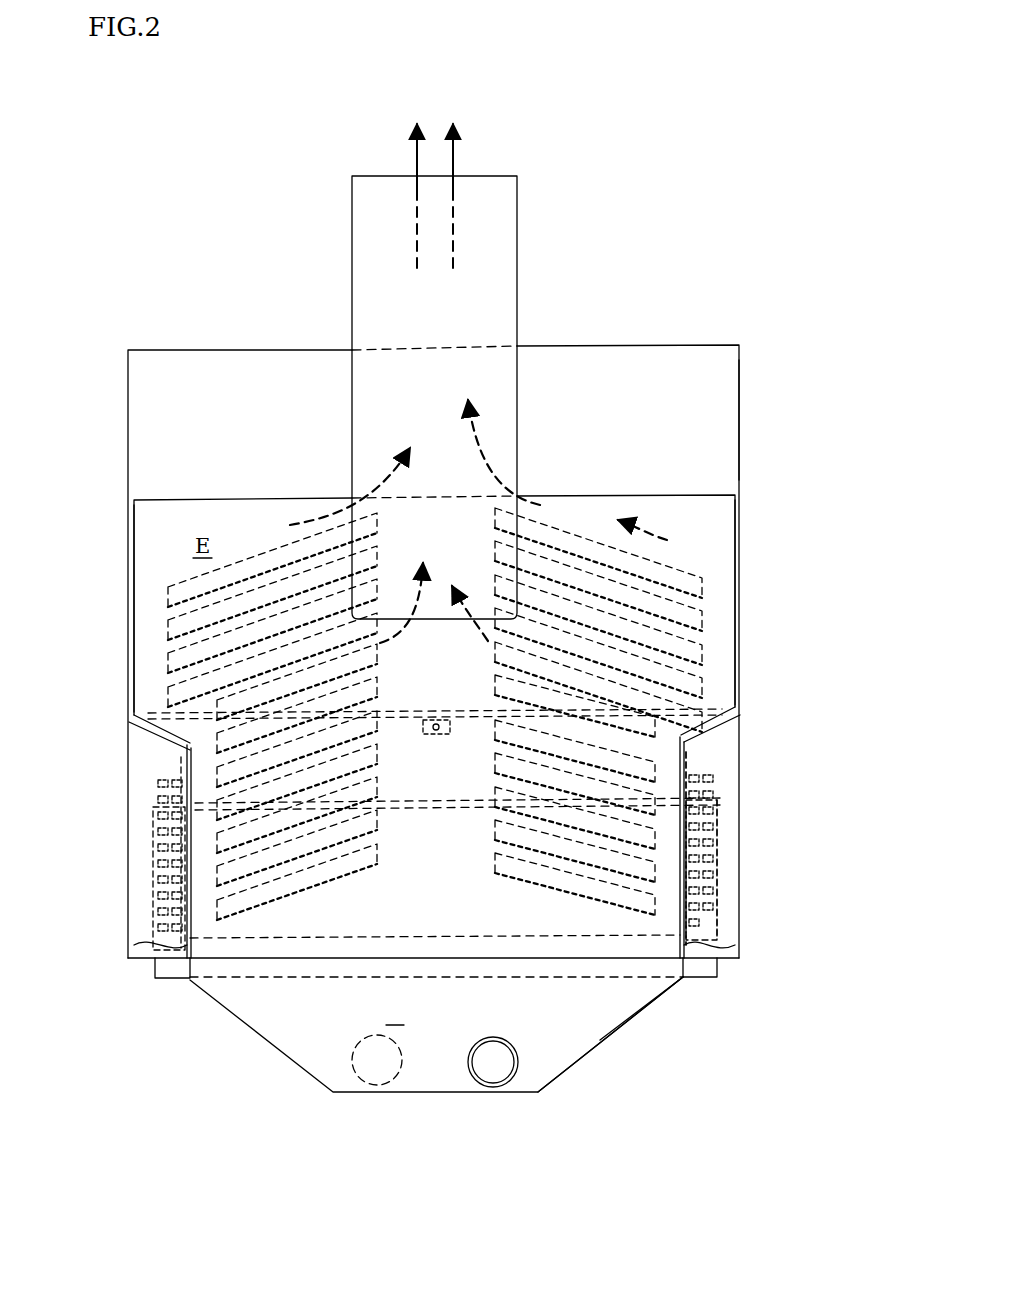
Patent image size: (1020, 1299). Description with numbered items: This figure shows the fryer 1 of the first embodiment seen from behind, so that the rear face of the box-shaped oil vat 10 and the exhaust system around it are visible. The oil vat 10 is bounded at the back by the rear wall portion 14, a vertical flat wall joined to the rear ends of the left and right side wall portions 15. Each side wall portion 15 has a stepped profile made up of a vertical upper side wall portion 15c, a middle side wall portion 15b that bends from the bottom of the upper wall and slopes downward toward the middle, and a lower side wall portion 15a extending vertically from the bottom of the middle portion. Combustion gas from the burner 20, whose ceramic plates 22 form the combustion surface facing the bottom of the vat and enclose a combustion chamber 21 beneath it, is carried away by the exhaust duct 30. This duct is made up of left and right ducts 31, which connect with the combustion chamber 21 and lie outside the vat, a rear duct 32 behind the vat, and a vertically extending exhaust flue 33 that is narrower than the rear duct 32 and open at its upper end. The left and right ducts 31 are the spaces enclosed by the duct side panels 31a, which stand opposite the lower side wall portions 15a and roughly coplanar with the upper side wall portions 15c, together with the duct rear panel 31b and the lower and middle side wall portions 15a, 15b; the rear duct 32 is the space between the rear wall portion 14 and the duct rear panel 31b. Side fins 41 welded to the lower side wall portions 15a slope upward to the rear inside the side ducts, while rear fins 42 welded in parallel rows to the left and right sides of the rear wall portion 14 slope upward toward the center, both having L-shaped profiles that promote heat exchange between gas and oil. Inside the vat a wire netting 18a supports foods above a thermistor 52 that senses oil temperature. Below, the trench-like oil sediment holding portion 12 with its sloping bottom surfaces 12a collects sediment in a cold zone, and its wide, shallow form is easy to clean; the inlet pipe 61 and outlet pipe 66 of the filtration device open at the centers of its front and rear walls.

The fryer 1 is at (614, 190).
The oil vat 10 is at (655, 320).
The rear wall portion 14 is at (737, 415).
The exhaust flue 33 is at (517, 250).
The rear fins 42 is at (660, 558).
The wire netting 18a is at (470, 712).
The ceramic plates 22 is at (375, 942).
The thermistor 52 is at (425, 730).
The upper side wall portion 15c is at (130, 611).
The middle side wall portion 15b is at (743, 732).
The side wall portions 15 is at (145, 868).
The exhaust duct 30 is at (746, 823).
The duct side panels 31a is at (130, 813).
The side fins 41 is at (155, 850).
The left and right ducts 31 is at (150, 765).
The lower side wall portion 15a is at (180, 945).
The rear duct 32 is at (500, 960).
The duct rear panel 31b is at (172, 979).
The combustion chamber 21 is at (650, 962).
The oil sediment holding portion 12 is at (548, 1050).
The bottom surfaces 12a is at (585, 1050).
The burner 20 is at (612, 980).
The inlet pipe 61 is at (392, 1072).
The outlet pipe 66 is at (490, 1070).